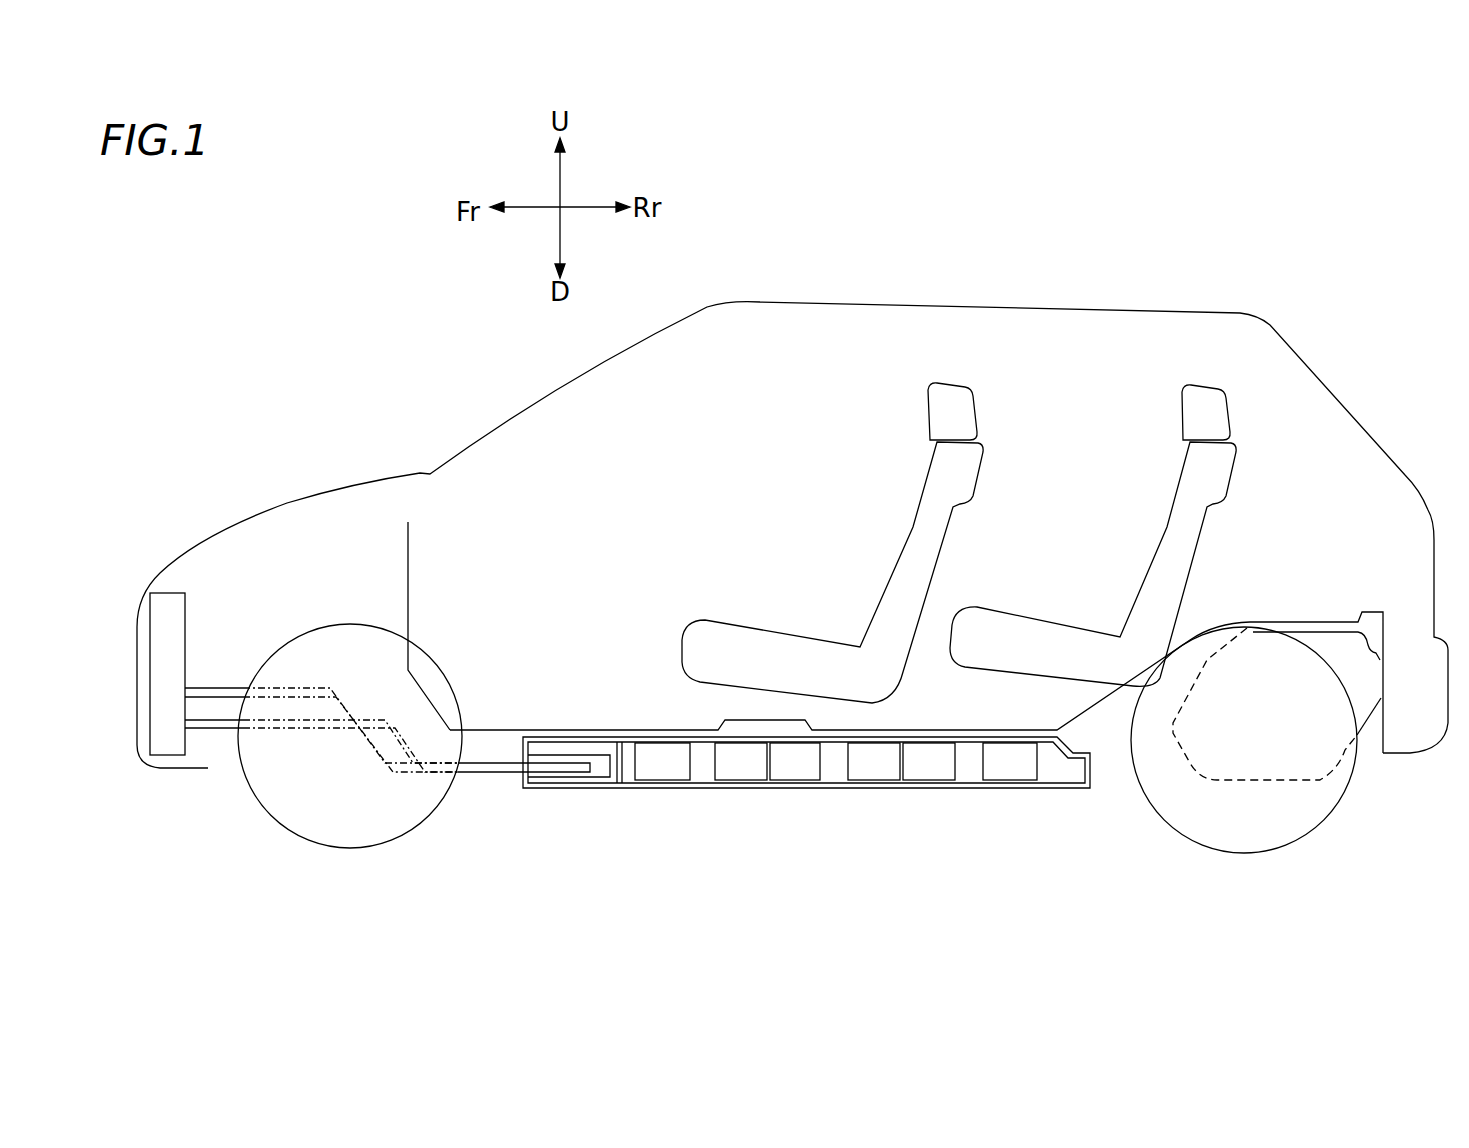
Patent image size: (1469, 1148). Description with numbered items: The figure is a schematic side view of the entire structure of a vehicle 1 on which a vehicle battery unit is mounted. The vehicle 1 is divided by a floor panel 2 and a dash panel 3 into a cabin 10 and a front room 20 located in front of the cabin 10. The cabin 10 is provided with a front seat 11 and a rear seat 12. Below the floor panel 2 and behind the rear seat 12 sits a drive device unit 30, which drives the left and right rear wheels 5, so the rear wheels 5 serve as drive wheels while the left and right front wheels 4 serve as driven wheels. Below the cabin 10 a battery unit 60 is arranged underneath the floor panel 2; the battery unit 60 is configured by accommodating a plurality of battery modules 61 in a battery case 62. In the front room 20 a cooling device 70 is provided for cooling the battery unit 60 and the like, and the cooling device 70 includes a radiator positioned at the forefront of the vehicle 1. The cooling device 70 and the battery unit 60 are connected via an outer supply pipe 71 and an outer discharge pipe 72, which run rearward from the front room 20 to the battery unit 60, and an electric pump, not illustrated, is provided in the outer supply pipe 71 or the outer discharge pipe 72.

The vehicle 1 is at (404, 303).
The floor panel 2 is at (523, 732).
The dash panel 3 is at (408, 563).
The front wheels 4 is at (442, 803).
The rear wheels 5 is at (1335, 802).
The cabin 10 is at (767, 426).
The front seat 11 is at (908, 527).
The rear seat 12 is at (1167, 518).
The front room 20 is at (330, 528).
The drive device unit 30 is at (1366, 726).
The battery unit 60 is at (806, 811).
The battery modules 61 is at (925, 767).
The battery case 62 is at (965, 790).
The cooling device 70 is at (163, 593).
The outer supply pipe 71 is at (295, 727).
The outer discharge pipe 72 is at (273, 697).